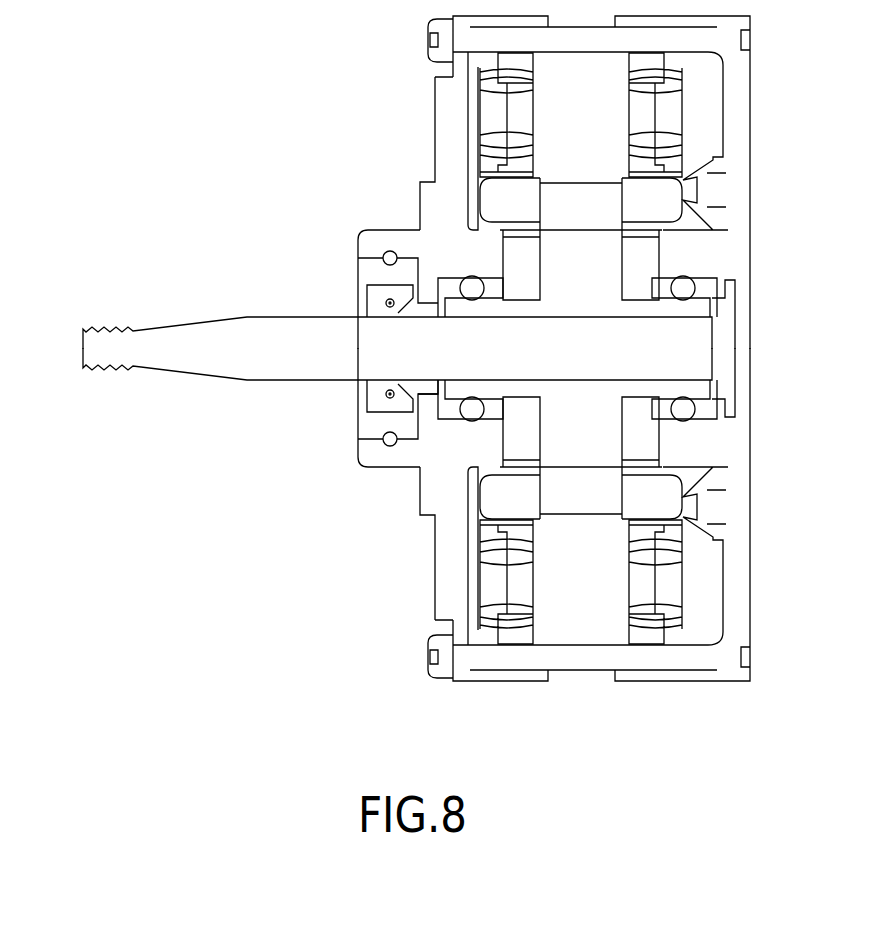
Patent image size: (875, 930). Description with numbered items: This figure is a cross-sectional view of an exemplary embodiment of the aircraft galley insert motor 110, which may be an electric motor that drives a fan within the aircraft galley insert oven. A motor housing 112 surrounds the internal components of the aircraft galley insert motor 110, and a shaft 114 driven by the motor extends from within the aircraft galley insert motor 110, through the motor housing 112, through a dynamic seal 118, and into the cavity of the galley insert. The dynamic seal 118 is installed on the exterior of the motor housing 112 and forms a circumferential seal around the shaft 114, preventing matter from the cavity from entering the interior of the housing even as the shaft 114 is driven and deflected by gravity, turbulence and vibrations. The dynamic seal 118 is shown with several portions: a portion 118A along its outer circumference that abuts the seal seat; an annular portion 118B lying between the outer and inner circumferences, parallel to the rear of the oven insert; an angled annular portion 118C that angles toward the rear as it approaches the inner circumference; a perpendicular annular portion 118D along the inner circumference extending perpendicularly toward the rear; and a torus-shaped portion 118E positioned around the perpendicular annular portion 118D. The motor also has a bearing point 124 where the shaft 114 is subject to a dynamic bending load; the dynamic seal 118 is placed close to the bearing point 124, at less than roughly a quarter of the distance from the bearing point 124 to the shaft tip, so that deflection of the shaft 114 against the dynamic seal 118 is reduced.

The aircraft galley insert motor 110 is at (615, 576).
The motor housing 112 is at (437, 560).
The shaft 114 is at (182, 353).
The dynamic seal 118 is at (366, 434).
The portion along the outer circumference 118A is at (366, 257).
The annular portion 118B is at (420, 300).
The angled annular portion 118C is at (417, 303).
The perpendicular annular portion 118D is at (386, 394).
The torus-shaped portion 118E is at (367, 410).
The bearing point 124 is at (446, 374).